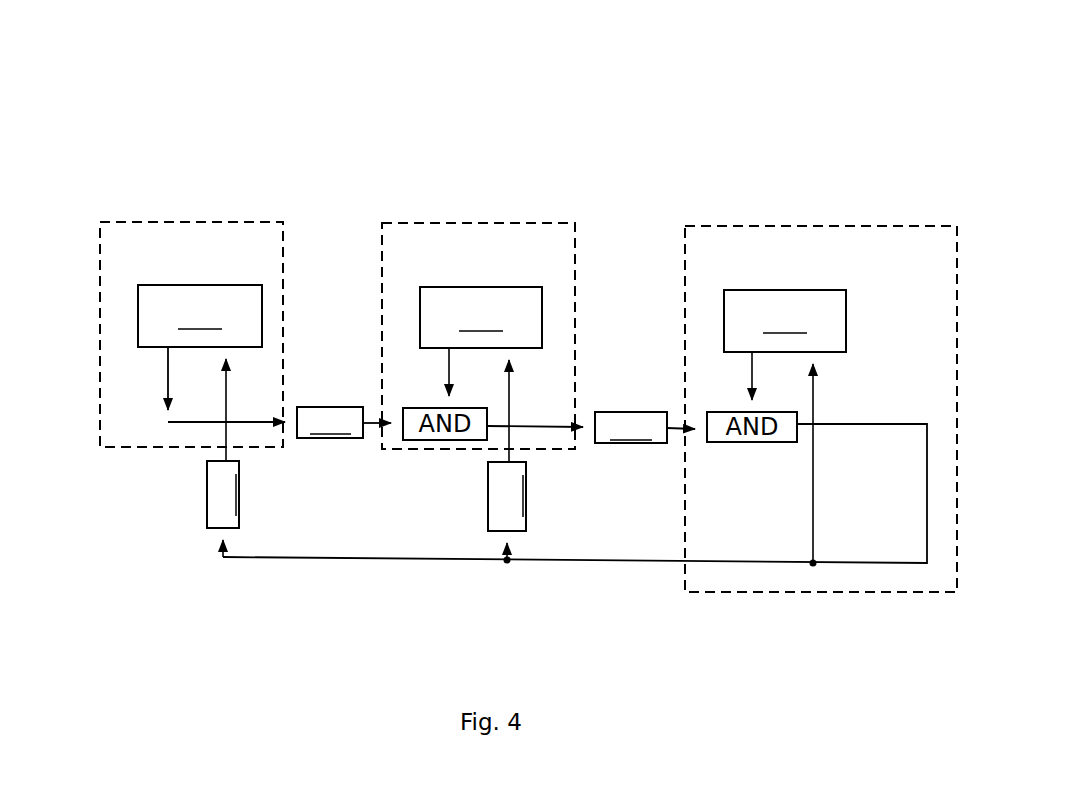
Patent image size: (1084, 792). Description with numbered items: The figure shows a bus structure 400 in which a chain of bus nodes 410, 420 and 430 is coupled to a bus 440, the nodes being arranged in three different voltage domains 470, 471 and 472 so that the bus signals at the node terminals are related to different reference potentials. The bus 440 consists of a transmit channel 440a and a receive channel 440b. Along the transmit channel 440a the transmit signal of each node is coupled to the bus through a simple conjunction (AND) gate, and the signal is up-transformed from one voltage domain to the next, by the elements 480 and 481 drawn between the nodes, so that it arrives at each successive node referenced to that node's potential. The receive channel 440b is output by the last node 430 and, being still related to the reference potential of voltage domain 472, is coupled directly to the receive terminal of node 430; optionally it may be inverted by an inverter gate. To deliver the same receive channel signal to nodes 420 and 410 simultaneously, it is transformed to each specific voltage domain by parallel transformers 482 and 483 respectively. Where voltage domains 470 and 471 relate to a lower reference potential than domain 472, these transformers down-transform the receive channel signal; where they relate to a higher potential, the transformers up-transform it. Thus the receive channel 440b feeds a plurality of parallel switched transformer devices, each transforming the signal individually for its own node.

The bus structure 400 is at (489, 107).
The bus node 410 is at (199, 328).
The bus node 420 is at (482, 329).
The bus node 430 is at (786, 332).
The bus 440 is at (228, 437).
The transmit channel 440a is at (167, 393).
The receive channel 440b is at (750, 563).
The voltage domain 470 is at (158, 222).
The voltage domain 471 is at (457, 223).
The voltage domain 472 is at (805, 226).
The first delay element 480 is at (330, 422).
The second delay element 481 is at (631, 427).
The transformer 482 is at (507, 496).
The transformer 483 is at (223, 494).